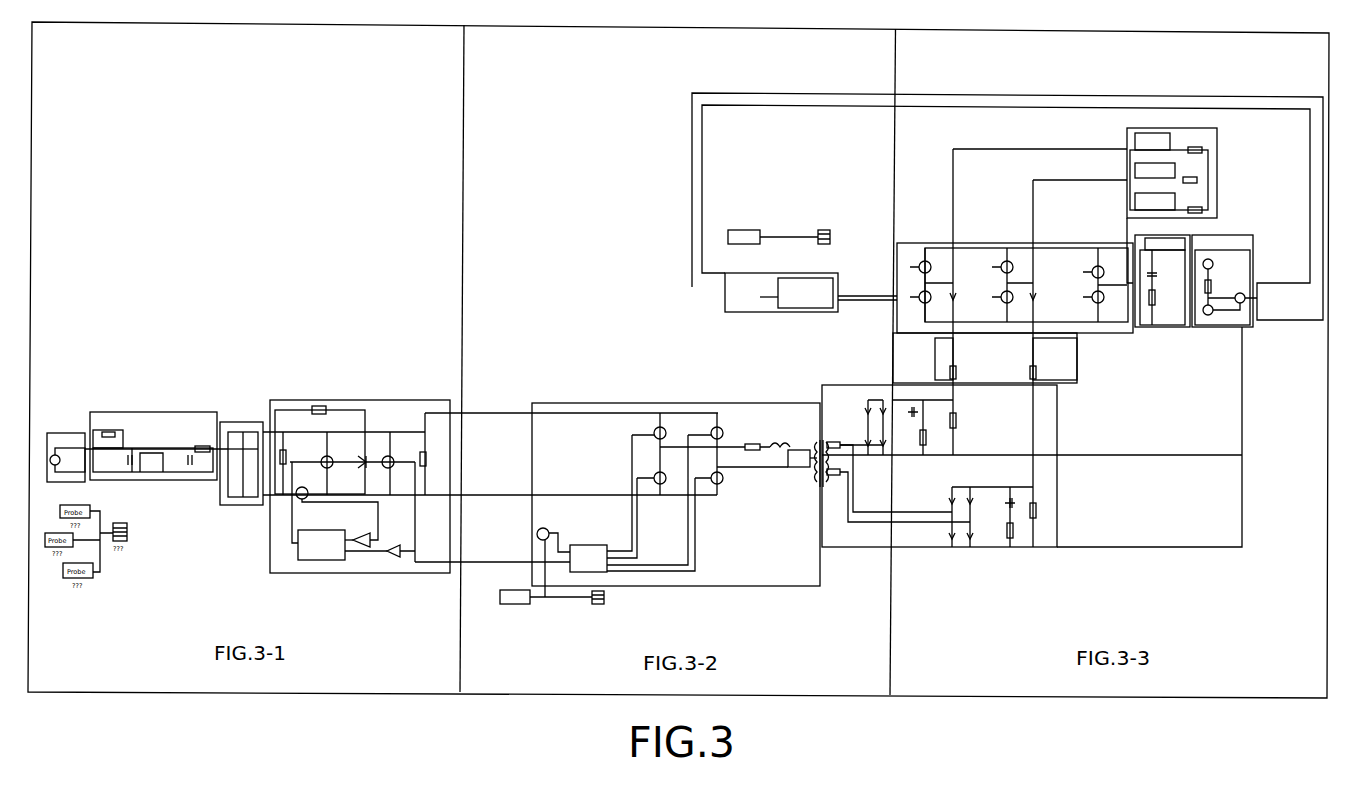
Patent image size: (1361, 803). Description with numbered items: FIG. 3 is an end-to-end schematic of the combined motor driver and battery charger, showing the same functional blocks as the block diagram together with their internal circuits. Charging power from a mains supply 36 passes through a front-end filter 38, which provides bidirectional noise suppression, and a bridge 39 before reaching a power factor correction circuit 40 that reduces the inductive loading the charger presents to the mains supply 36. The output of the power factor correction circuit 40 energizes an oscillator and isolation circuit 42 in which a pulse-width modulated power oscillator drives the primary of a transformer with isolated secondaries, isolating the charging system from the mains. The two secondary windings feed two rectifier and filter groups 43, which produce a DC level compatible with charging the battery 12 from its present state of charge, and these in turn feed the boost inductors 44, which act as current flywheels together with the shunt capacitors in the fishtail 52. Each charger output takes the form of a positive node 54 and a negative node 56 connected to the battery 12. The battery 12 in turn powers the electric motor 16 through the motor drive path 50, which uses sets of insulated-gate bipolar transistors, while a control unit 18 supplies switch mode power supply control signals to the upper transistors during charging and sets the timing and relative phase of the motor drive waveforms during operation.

The battery 12 is at (1215, 330).
The electric motor 16 is at (1220, 163).
The control unit 18 is at (725, 306).
The mains supply 36 is at (72, 483).
The front-end filter 38 is at (165, 483).
The bridge rectifier 39 is at (240, 507).
The power factor correction circuit 40 is at (355, 575).
The isolation circuit 42 is at (673, 588).
The rectifier and filter groups 43 is at (821, 390).
The boost inductors 44 is at (1013, 356).
The motor drive path 50 is at (940, 241).
The fishtail 52 is at (1165, 330).
The positive node 54 is at (940, 330).
The negative node 56 is at (1182, 455).